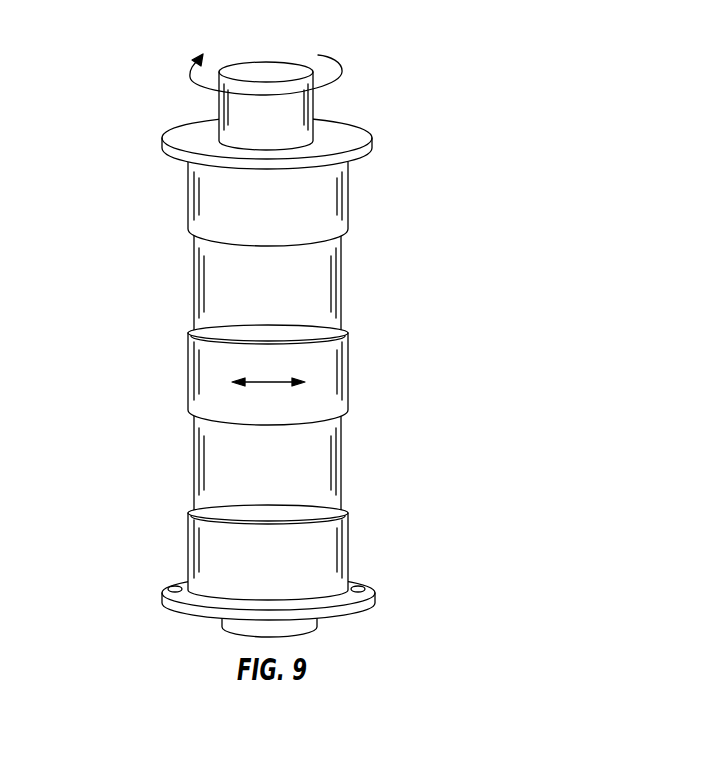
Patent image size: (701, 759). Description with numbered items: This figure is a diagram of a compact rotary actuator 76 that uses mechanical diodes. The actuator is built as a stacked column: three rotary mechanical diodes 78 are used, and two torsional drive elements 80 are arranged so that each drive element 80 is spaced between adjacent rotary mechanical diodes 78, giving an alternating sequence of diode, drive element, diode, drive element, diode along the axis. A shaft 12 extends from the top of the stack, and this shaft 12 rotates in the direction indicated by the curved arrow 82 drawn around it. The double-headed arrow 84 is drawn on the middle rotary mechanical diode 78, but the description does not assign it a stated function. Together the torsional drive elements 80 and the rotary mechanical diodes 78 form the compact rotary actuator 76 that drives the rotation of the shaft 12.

The shaft 12 is at (306, 106).
The compact rotary actuator 76 is at (341, 326).
The rotary mechanical diode 78 is at (299, 379).
The torsional drive element 80 is at (225, 372).
The arrow 82 is at (303, 61).
The axial translation arrow 84 is at (207, 346).